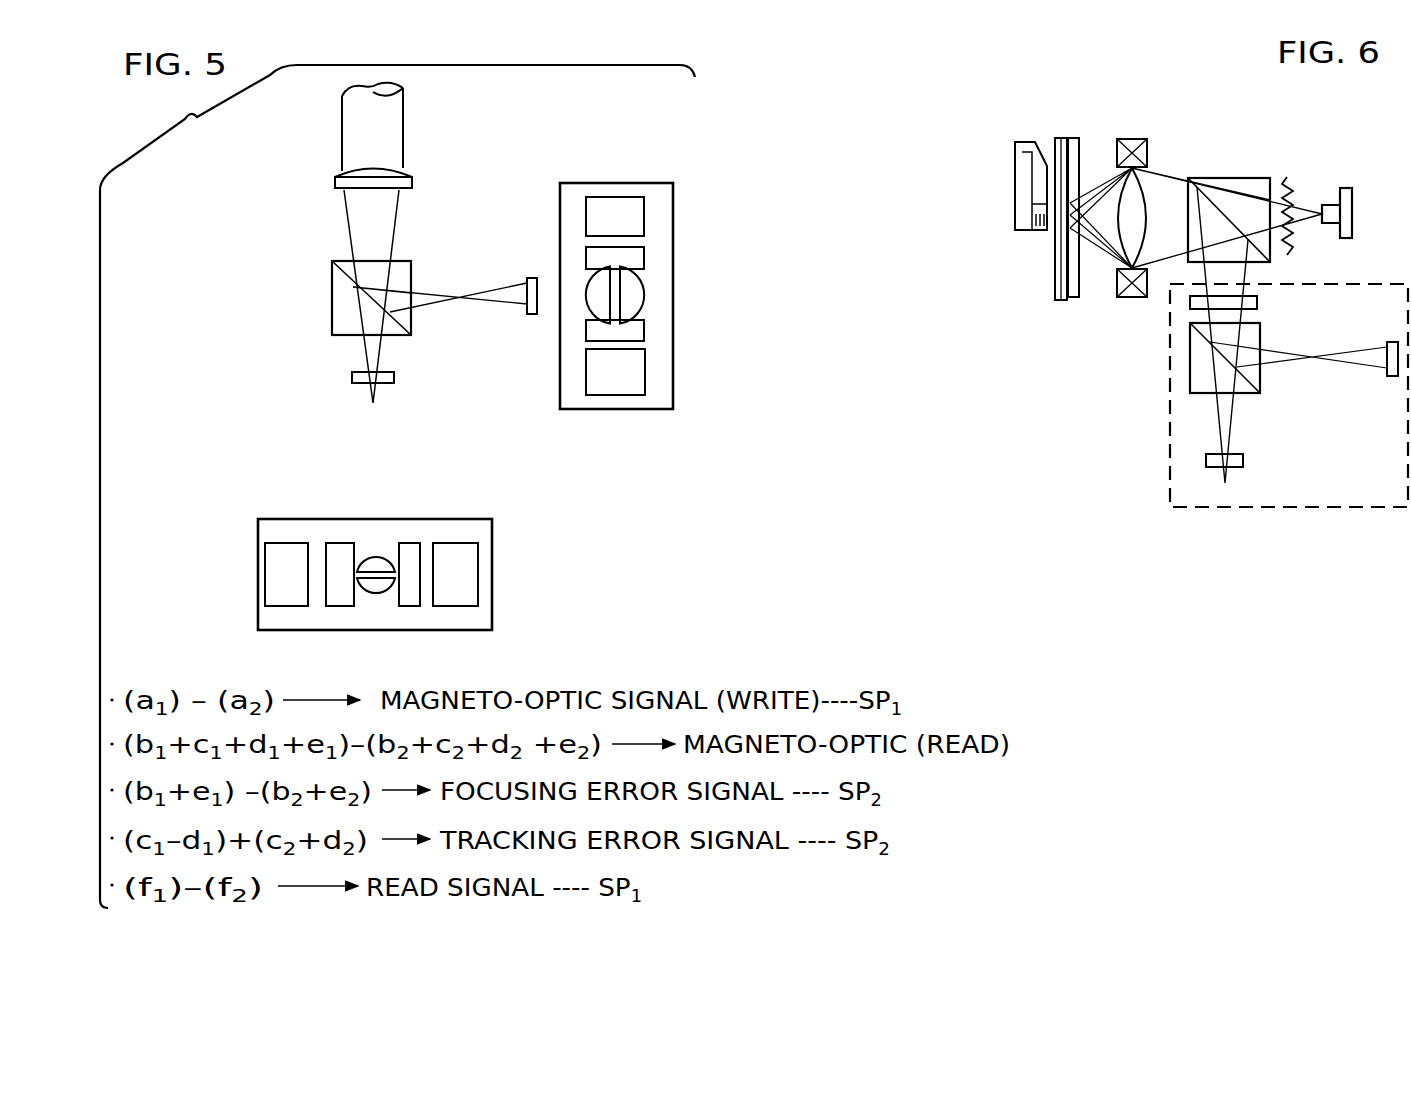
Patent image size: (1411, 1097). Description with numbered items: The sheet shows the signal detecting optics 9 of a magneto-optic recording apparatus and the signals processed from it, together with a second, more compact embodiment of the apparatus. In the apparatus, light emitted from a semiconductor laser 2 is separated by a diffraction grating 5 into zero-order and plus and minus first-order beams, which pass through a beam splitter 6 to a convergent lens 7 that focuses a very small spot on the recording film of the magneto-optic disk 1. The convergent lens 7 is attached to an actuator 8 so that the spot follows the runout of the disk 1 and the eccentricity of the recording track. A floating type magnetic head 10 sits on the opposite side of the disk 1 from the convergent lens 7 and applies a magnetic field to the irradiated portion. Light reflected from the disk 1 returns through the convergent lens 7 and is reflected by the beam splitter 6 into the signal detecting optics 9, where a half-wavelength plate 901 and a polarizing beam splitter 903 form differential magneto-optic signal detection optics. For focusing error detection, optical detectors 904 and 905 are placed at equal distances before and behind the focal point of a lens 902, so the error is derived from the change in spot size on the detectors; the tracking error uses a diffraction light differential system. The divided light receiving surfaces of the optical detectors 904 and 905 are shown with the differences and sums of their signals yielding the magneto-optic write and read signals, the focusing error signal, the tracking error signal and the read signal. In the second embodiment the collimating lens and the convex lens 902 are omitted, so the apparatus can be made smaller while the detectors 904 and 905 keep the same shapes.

In FIG. 6, the magneto-optic disk 1 is at (1047, 107).
In FIG. 6, the semiconductor laser 2 is at (1347, 188).
In FIG. 6, the diffraction grating 5 is at (1288, 177).
In FIG. 6, the beam splitter 6 is at (1239, 178).
In FIG. 6, the convergent lens 7 is at (1148, 182).
In FIG. 6, the actuator 8 is at (1136, 139).
In FIG. 6, the signal detecting optics 9 is at (1170, 455).
In FIG. 6, the magnetic head 10 is at (1015, 190).
In FIG. 6, the half-wavelength plate 901 is at (1257, 298).
In FIG. 5, the lens 902 is at (335, 180).
In FIG. 5, the polarizing beam splitter 903 is at (332, 303).
In FIG. 6, the polarizing beam splitter 903 is at (1258, 388).
In FIG. 5, the optical detector 904 is at (352, 378).
In FIG. 6, the optical detector 904 is at (1243, 460).
In FIG. 5, the optical detector 905 is at (527, 278).
In FIG. 6, the optical detector 905 is at (1392, 376).